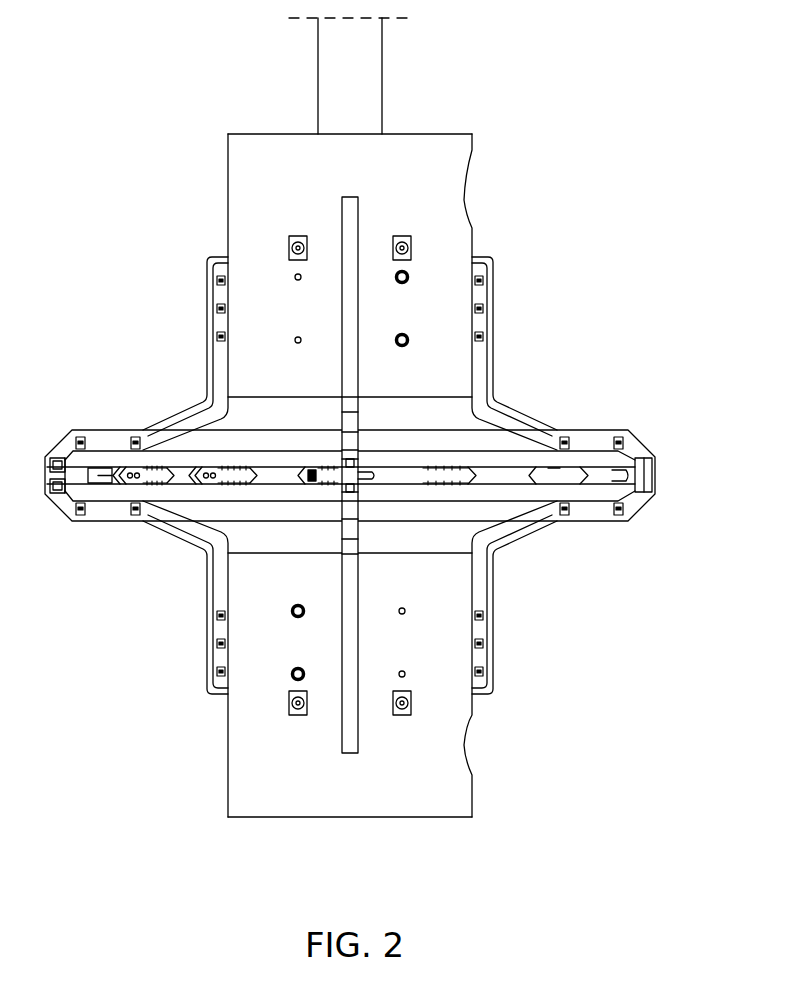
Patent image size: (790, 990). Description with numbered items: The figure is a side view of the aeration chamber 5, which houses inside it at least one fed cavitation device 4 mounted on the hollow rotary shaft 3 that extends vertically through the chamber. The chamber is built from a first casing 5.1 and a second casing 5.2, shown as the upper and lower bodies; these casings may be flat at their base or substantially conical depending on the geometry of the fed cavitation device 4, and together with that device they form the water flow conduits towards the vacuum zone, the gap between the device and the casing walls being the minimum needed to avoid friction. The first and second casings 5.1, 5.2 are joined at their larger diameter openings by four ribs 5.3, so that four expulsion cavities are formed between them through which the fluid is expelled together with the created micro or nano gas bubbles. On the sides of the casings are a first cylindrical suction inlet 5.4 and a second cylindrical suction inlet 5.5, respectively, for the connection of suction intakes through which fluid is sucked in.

The hollow rotary shaft 3 is at (391, 41).
The fed cavitation device 4 is at (609, 475).
The aeration chamber 5 is at (216, 140).
The first casing 5.1 is at (280, 220).
The second casing 5.2 is at (251, 748).
The ribs 5.3 is at (141, 435).
The first cylindrical shape suction inlet 5.4 is at (470, 195).
The second cylindrical shape suction inlet 5.5 is at (473, 750).